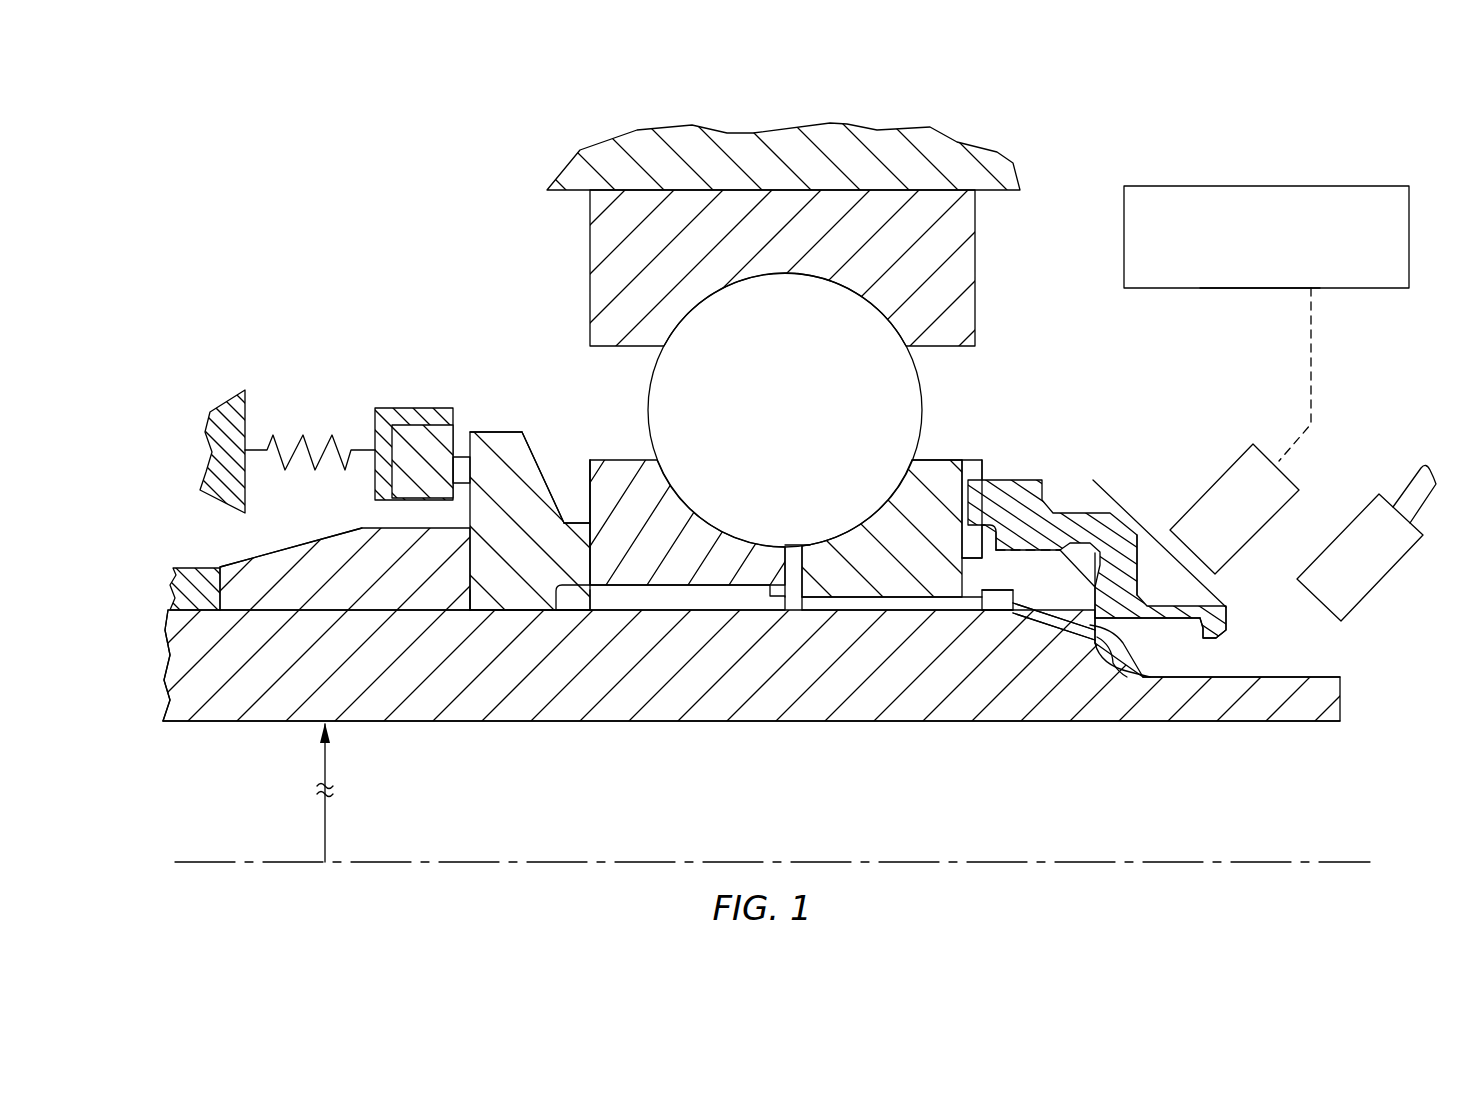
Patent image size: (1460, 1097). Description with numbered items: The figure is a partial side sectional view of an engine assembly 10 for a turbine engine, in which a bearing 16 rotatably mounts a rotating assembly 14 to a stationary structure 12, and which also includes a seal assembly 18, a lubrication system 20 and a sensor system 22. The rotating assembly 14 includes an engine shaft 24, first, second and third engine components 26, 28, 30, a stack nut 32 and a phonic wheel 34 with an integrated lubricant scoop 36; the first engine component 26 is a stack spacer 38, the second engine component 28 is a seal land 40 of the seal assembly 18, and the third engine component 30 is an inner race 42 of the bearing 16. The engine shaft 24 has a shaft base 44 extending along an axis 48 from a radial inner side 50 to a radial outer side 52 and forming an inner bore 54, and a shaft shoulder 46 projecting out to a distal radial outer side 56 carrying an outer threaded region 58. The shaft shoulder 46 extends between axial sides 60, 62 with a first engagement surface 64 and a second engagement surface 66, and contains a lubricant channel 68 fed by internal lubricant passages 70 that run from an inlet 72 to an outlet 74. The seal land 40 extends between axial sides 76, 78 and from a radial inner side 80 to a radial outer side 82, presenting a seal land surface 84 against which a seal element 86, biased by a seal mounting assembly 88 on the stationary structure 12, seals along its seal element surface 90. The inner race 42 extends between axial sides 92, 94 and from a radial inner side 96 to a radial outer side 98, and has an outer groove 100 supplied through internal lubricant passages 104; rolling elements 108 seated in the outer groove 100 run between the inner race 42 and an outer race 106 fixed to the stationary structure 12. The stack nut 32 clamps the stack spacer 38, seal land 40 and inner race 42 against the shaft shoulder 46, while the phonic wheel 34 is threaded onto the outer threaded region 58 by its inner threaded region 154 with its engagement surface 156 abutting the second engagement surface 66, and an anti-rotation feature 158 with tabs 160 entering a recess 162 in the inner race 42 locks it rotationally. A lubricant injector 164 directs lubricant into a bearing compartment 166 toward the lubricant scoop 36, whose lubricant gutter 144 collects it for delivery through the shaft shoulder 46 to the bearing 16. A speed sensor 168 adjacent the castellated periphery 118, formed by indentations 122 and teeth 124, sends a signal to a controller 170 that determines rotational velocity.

The engine assembly 10 is at (229, 145).
The stationary structure 12 is at (805, 128).
The rotating assembly 14 is at (752, 705).
The bearing 16 is at (792, 368).
The seal assembly 18 is at (395, 405).
The lubrication system 20 is at (1374, 507).
The sensor system 22 is at (1337, 162).
The engine shaft 24 is at (168, 670).
The first engine component 26 is at (340, 569).
The second engine component 28 is at (538, 521).
The third engine component 30 is at (542, 448).
The stack nut 32 is at (172, 580).
The phonic wheel 34 is at (1148, 554).
The lubricant scoop 36 is at (1247, 628).
The stack spacer 38 is at (283, 587).
The seal land 40 is at (560, 556).
The inner race 42 is at (591, 424).
The shaft base 44 is at (290, 681).
The shaft shoulder 46 is at (1033, 588).
The axis 48 is at (220, 865).
The radial inner side 50 is at (232, 722).
The radial outer side 52 is at (262, 610).
The inner bore 54 is at (249, 828).
The distal radial outer side 56 is at (1097, 554).
The outer threaded region 58 is at (1018, 548).
The shoulder first side 60 is at (948, 688).
The shoulder second side 62 is at (1164, 719).
The shoulder first engagement surface 64 is at (925, 612).
The shoulder second engagement surface 66 is at (1112, 657).
The lubricant channel 68 is at (975, 620).
The internal lubricant passages 70 is at (998, 712).
The inlet 72 is at (1120, 648).
The outlet 74 is at (1010, 633).
The seal land first side 76 is at (468, 612).
The seal land second side 78 is at (620, 611).
The seal land radial inner side 80 is at (522, 611).
The seal land radial outer side 82 is at (490, 431).
The seal land surface 84 is at (465, 450).
The seal element 86 is at (418, 420).
The seal mounting assembly 88 is at (304, 398).
The seal element surface 90 is at (530, 443).
The inner race first side 92 is at (589, 484).
The inner race second side 94 is at (987, 462).
The inner race radial inner side 96 is at (702, 611).
The inner race radial outer side 98 is at (640, 460).
The outer groove 100 is at (856, 498).
The race passages 104 is at (783, 547).
The outer race 106 is at (763, 246).
The rolling elements 108 is at (765, 348).
The castellated periphery 118 is at (1146, 512).
The indentations 122 is at (1178, 592).
The teeth 124 is at (1172, 559).
The lubricant gutter 144 is at (1184, 645).
The inner threaded region 154 is at (980, 594).
The wheel engagement surface 156 is at (1077, 627).
The anti-rotation feature 158 is at (949, 473).
The anti-rotation tabs 160 is at (965, 518).
The recess 162 is at (972, 462).
The lubricant injector 164 is at (1339, 570).
The bearing compartment 166 is at (1035, 303).
The speed sensor 168 is at (1220, 510).
The controller 170 is at (1210, 290).